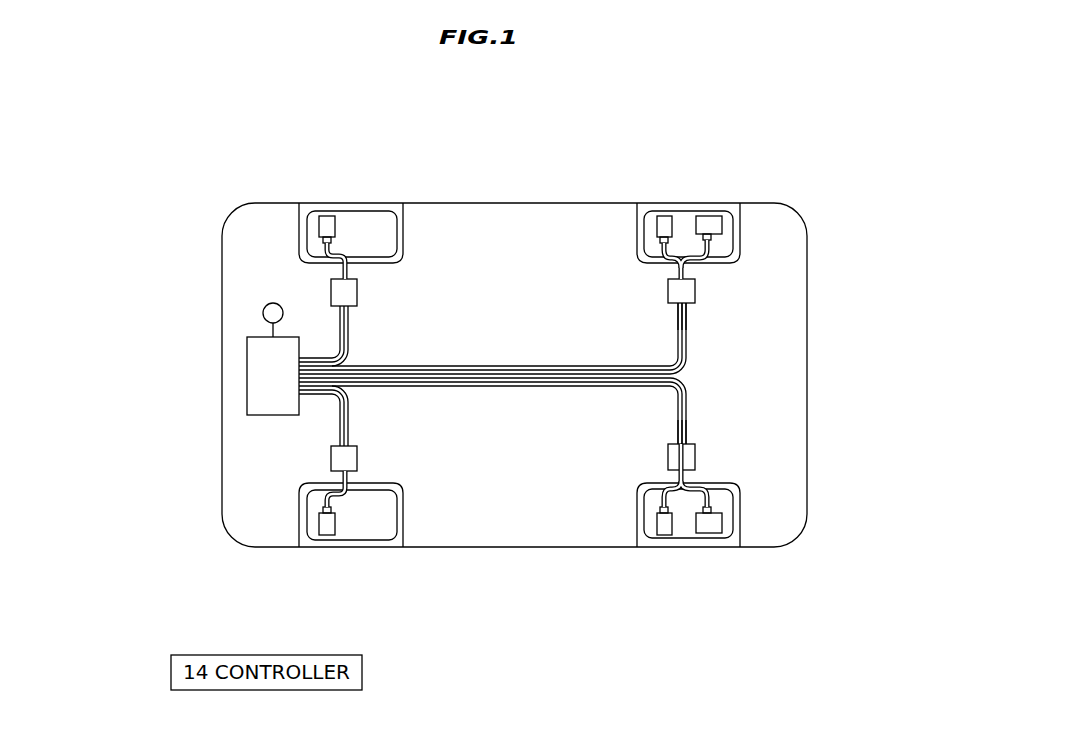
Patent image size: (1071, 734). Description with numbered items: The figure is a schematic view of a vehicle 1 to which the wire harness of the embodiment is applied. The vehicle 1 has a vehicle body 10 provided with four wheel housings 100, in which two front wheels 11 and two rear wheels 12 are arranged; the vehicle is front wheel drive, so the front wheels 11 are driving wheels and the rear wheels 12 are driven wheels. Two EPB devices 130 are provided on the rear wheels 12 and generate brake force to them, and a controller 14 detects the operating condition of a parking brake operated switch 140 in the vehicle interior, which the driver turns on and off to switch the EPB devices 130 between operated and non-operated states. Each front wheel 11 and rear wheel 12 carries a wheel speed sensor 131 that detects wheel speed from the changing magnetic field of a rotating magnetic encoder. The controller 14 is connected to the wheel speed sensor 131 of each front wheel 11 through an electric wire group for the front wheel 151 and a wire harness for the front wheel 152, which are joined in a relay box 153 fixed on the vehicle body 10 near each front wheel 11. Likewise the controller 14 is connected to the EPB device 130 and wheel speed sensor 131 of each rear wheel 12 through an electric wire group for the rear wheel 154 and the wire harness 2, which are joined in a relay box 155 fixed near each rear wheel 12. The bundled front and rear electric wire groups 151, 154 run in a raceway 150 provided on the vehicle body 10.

The vehicle 1 is at (204, 128).
The vehicle body 10 is at (222, 266).
The wheel housing 100 is at (376, 192).
The front wheel 11 is at (401, 235).
The rear wheel 12 is at (740, 232).
The controller 14 is at (247, 370).
The EPB device 130 is at (709, 216).
The wheel speed sensor 131 is at (326, 216).
The parking brake operated switch 140 is at (273, 303).
The raceway 150 is at (495, 364).
The electric wire group for the front wheel 151 is at (350, 320).
The wire harness for the front wheel 152 is at (350, 268).
The relay box 153 is at (357, 295).
The electric wire group for the rear wheel 154 is at (690, 320).
The relay box 155 is at (695, 295).
The wire harness 2 is at (690, 270).